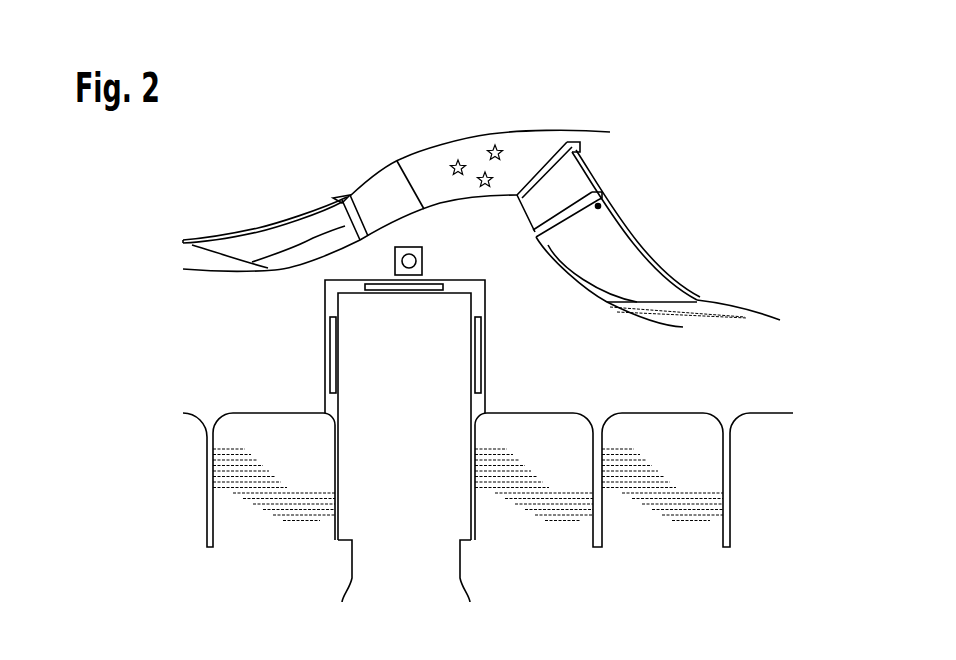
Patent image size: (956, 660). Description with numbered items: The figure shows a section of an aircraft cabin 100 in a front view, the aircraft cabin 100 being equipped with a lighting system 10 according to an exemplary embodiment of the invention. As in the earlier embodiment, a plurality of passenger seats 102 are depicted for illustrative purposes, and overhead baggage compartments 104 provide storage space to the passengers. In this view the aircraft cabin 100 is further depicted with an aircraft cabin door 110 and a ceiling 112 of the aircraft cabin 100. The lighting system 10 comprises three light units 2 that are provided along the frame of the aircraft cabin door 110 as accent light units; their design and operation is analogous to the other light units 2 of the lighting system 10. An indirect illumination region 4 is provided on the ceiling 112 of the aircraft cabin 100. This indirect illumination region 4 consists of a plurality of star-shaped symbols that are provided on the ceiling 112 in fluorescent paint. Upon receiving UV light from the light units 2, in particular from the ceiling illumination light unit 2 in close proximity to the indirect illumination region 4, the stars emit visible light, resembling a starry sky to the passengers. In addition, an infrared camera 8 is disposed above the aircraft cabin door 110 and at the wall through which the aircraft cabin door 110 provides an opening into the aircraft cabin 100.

The light unit 2 is at (567, 158).
The indirect illumination region 4 is at (493, 150).
The infrared camera 8 is at (395, 263).
The lighting system 10 is at (355, 168).
The aircraft cabin 100 is at (227, 352).
The passenger seat 102 is at (657, 422).
The overhead baggage compartment 104 is at (295, 238).
The aircraft cabin door 110 is at (478, 295).
The ceiling 112 is at (425, 170).